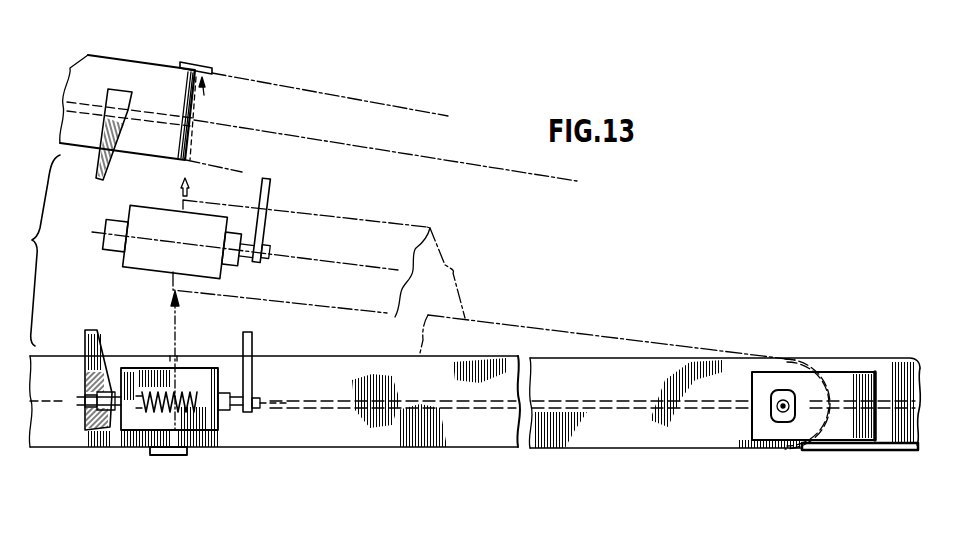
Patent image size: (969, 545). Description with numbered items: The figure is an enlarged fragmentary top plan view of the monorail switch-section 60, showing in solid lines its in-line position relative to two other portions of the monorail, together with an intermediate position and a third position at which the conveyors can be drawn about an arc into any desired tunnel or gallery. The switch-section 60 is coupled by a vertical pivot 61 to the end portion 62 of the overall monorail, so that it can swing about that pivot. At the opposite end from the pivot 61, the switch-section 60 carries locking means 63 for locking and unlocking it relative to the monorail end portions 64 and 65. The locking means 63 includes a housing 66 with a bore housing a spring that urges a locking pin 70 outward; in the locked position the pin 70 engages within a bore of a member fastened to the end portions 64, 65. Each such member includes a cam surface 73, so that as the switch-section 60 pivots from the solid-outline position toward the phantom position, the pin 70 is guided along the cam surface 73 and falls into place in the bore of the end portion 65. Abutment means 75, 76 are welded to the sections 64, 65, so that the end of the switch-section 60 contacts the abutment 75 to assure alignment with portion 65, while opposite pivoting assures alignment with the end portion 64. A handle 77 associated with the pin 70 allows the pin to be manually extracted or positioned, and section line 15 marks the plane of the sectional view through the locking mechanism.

The section line 15- 15 is at (62, 401).
The monorail switch-section 60 is at (573, 358).
The vertical pivot 61 is at (796, 391).
The end portion 62 is at (879, 452).
The locking means 63 is at (195, 272).
The end portion 64 is at (58, 432).
The end portion 65 is at (142, 143).
The housing 66 is at (200, 424).
The locking pin 70 is at (108, 242).
The cam surface 73 is at (110, 176).
The abutment means 75 is at (207, 62).
The abutment means 76 is at (175, 458).
The handle 77 is at (250, 346).